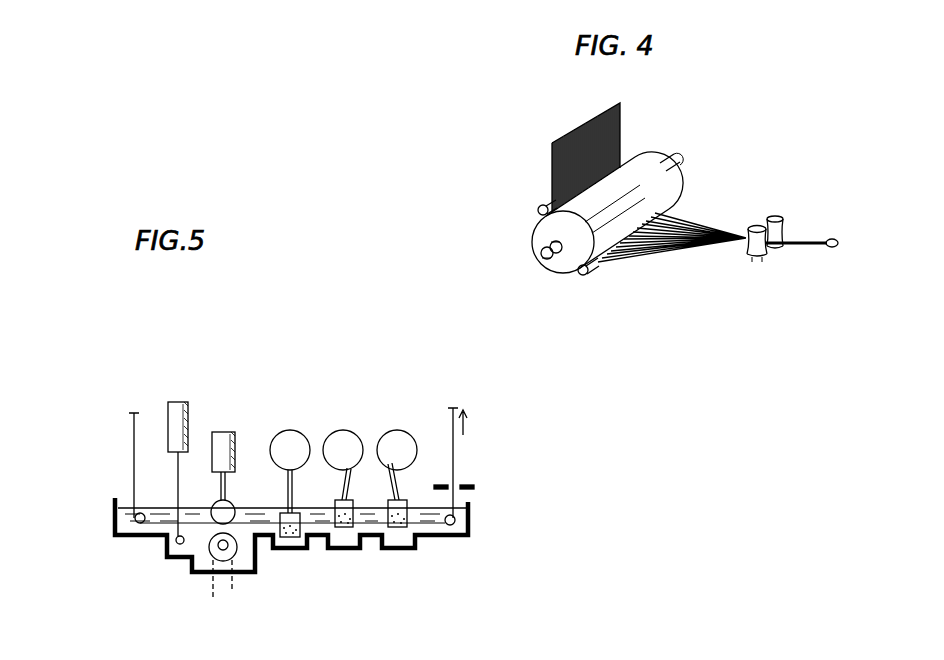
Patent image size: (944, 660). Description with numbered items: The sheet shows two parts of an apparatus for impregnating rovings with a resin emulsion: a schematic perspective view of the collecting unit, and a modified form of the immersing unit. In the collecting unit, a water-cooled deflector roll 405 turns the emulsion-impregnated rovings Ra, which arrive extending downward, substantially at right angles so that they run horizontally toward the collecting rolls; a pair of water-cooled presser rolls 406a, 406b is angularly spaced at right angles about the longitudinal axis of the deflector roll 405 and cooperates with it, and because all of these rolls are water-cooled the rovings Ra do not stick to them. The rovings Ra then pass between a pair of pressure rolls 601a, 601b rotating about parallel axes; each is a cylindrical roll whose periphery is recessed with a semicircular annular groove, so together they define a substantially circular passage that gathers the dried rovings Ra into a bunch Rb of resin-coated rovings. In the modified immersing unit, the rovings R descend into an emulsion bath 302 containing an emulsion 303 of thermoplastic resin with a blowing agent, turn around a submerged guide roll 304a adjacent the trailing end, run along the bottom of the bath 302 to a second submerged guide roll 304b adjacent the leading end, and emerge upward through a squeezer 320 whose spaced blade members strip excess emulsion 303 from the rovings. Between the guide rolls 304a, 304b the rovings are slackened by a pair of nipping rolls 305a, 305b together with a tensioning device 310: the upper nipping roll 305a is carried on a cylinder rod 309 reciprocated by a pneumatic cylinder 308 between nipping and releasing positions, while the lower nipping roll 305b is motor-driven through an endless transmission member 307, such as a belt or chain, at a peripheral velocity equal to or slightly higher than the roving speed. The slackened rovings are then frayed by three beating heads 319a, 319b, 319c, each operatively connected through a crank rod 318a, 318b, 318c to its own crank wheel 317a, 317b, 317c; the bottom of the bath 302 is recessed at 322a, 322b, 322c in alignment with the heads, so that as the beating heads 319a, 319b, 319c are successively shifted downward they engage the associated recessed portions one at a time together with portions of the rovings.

In FIG. 4, the deflector roll 405 is at (650, 175).
In FIG. 4, the rovings Ra is at (550, 160).
In FIG. 4, the bunch of resin-coated rovings Rb is at (808, 250).
In FIG. 4, the presser roll 406a is at (538, 212).
In FIG. 4, the presser roll 406b is at (586, 275).
In FIG. 4, the pressure roll 601a is at (776, 216).
In FIG. 4, the pressure roll 601b is at (753, 258).
In FIG. 5, the rovings R is at (132, 428).
In FIG. 5, the emulsion bath 302 is at (471, 515).
In FIG. 5, the emulsion 303 is at (157, 512).
In FIG. 5, the guide roll 304a is at (135, 519).
In FIG. 5, the guide roll 304b is at (455, 522).
In FIG. 5, the nipping roll 305a is at (226, 508).
In FIG. 5, the nipping roll 305b is at (237, 562).
In FIG. 5, the endless transmission member 307 is at (213, 580).
In FIG. 5, the pneumatic cylinder 308 is at (238, 436).
In FIG. 5, the cylinder rod 309 is at (218, 494).
In FIG. 5, the tensioning device 310 is at (172, 398).
In FIG. 5, the crank wheel 317a is at (276, 433).
In FIG. 5, the crank wheel 317b is at (350, 431).
In FIG. 5, the crank wheel 317c is at (411, 436).
In FIG. 5, the crank rod 318a is at (300, 513).
In FIG. 5, the crank rod 318b is at (353, 500).
In FIG. 5, the crank rod 318c is at (407, 500).
In FIG. 5, the beating head 319a is at (293, 550).
In FIG. 5, the beating head 319b is at (350, 550).
In FIG. 5, the beating head 319c is at (403, 550).
In FIG. 5, the squeezer 320 is at (464, 484).
In FIG. 5, the recessed portion 322a is at (284, 540).
In FIG. 5, the recessed portion 322b is at (345, 530).
In FIG. 5, the recessed portion 322c is at (400, 530).